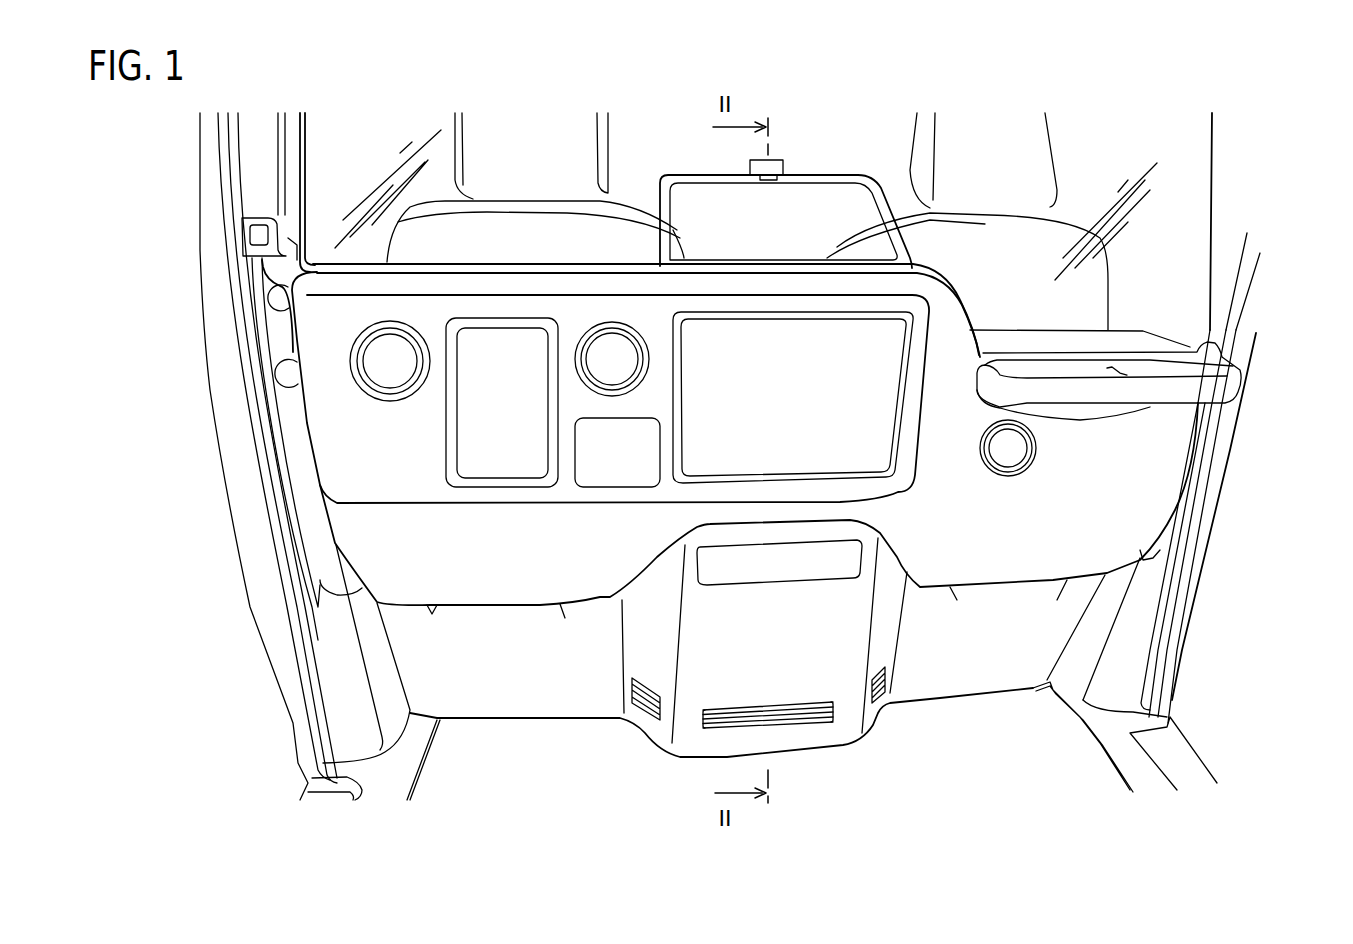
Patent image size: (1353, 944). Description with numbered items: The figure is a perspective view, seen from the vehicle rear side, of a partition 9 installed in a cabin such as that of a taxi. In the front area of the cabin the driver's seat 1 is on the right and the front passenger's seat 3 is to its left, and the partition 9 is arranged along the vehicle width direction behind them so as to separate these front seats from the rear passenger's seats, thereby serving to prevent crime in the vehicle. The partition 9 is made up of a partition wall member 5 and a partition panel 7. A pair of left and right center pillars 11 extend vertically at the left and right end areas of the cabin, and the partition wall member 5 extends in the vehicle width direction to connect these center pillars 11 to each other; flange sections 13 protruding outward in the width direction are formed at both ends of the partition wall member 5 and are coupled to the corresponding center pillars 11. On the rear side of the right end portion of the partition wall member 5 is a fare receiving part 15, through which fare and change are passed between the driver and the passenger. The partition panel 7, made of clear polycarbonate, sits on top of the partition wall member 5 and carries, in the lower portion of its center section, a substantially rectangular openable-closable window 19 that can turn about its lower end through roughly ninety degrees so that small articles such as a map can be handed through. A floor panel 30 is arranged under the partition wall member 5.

The driver's seat 1 is at (990, 223).
The front passenger's seat 3 is at (533, 223).
The partition wall member 5 is at (523, 637).
The partition panel 7 is at (1193, 203).
The partition 9 is at (940, 698).
The center pillars 11 is at (273, 623).
The flange sections 13 is at (282, 331).
The fare receiving part 15 is at (1073, 427).
The openable-closable window 19 is at (810, 228).
The floor panel 30 is at (448, 740).